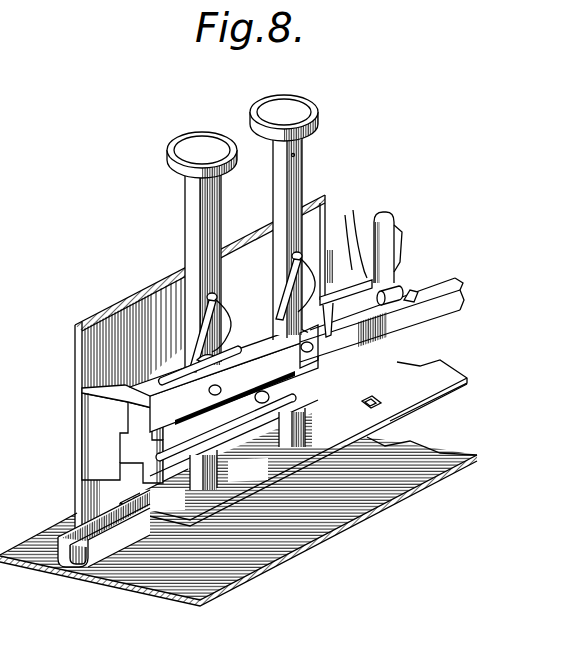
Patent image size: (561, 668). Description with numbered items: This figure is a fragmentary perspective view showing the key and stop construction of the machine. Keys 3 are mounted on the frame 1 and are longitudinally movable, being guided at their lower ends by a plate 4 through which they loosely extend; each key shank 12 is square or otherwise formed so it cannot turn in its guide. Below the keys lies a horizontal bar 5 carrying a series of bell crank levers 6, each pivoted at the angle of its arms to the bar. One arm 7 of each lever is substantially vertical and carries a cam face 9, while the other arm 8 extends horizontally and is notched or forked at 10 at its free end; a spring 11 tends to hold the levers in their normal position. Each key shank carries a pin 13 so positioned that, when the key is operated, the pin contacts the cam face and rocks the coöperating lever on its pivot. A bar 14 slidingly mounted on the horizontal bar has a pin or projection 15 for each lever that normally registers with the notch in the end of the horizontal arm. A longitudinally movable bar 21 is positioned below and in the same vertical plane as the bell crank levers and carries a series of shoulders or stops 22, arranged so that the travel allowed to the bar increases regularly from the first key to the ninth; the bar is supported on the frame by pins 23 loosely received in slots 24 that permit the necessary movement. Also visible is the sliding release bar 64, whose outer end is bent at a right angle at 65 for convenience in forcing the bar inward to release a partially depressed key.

The frame 1 is at (117, 298).
The key 3 is at (186, 134).
The plate 4 is at (306, 425).
The horizontal bar 5 is at (250, 350).
The bell crank lever 6 is at (374, 308).
The vertical arm 7 is at (209, 328).
The horizontal arm 8 is at (248, 334).
The cam face 9 is at (224, 326).
The notch 10 is at (326, 316).
The spring 11 is at (372, 210).
The key shank 12 is at (276, 191).
The pin 13 is at (216, 296).
The sliding bar 14 is at (92, 389).
The pin 15 is at (147, 390).
The longitudinally movable bar 21 is at (372, 352).
The stop 22 is at (417, 296).
The pin 23 is at (270, 403).
The slot 24 is at (173, 474).
The sliding bar 64 is at (130, 517).
The bent end 65 is at (73, 553).